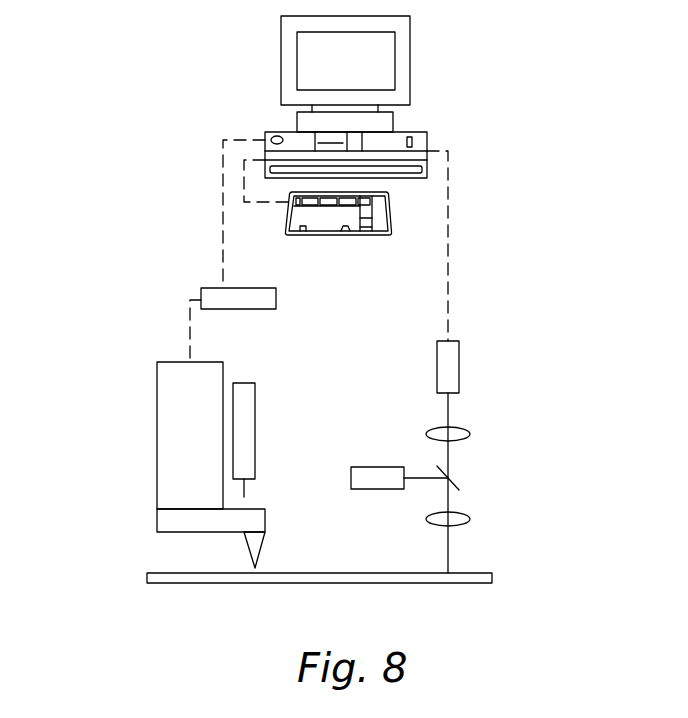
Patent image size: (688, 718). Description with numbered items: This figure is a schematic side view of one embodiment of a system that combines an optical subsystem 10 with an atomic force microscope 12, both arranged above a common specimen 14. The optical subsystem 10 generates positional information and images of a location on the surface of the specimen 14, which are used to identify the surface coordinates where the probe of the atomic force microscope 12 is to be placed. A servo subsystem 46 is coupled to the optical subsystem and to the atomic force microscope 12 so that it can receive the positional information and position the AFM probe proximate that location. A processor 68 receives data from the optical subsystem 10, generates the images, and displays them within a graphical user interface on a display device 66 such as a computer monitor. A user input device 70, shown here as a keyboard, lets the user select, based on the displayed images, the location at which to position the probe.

The display device 66 is at (361, 72).
The processor 68 is at (427, 149).
The user input device 70 is at (340, 235).
The servo subsystem 46 is at (255, 309).
The atomic force microscope 12 is at (122, 432).
The specimen 14 is at (490, 573).
The optical subsystem 10 is at (505, 435).